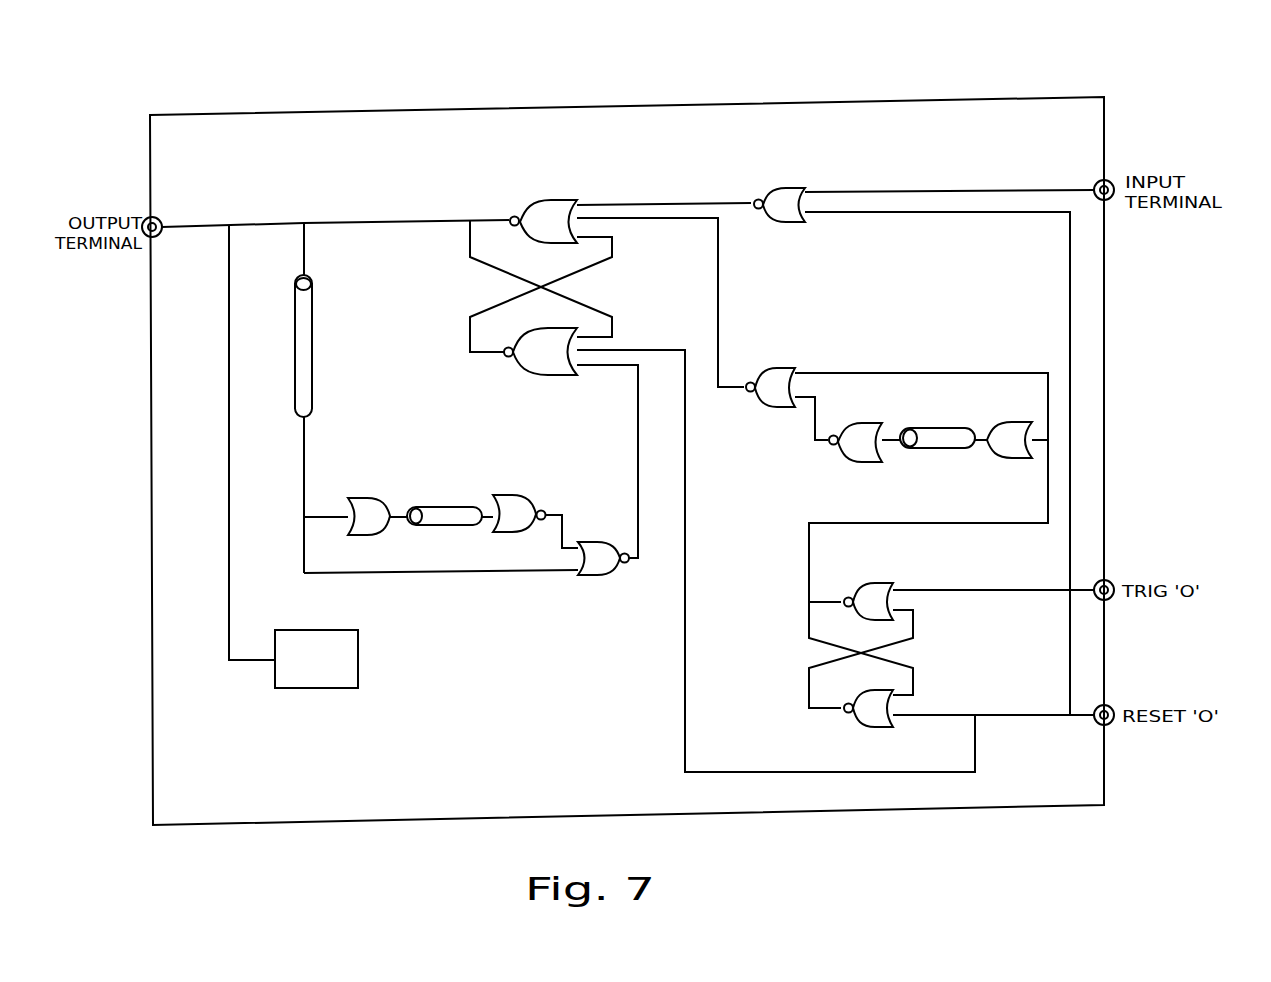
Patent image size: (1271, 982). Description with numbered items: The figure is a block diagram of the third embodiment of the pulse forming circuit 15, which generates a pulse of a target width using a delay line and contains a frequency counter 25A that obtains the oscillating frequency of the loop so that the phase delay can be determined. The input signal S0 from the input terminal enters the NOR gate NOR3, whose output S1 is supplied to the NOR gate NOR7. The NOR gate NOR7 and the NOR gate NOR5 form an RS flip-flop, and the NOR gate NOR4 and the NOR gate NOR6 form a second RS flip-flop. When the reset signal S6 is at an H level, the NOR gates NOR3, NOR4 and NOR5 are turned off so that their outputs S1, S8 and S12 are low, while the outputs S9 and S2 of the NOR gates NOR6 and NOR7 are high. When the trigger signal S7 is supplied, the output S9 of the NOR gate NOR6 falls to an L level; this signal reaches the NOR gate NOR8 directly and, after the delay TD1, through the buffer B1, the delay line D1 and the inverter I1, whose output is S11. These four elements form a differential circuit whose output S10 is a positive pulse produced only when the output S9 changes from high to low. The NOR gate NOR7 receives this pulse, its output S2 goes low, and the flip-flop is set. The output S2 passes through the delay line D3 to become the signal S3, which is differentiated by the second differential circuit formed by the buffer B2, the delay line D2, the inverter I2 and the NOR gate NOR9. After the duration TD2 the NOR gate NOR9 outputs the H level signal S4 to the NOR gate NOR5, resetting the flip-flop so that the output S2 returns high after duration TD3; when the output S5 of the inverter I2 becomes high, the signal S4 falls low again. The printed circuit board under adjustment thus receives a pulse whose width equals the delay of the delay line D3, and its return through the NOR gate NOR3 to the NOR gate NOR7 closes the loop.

The pulse forming circuit 15 is at (993, 97).
The frequency counter 25A is at (291, 690).
The NOR gate NOR3 is at (791, 190).
The NOR gate NOR4 is at (877, 727).
The NOR gate NOR5 is at (540, 376).
The NOR gate NOR6 is at (880, 592).
The NOR gate NOR7 is at (545, 200).
The NOR gate NOR8 is at (780, 377).
The NOR gate NOR9 is at (595, 573).
The delay line D1 is at (945, 448).
The delay line D2 is at (440, 525).
The delay line D3 is at (312, 363).
The buffer B1 is at (1021, 452).
The buffer B2 is at (368, 500).
The inverter I1 is at (859, 453).
The inverter I2 is at (512, 497).
The input signal S0 is at (949, 179).
The output from NOR gate NOR3 S1 is at (664, 195).
The output from NOR gate NOR7 S2 is at (335, 212).
The output from delay line D3 S3 is at (441, 508).
The output from NOR gate NOR9 S4 is at (624, 461).
The output from inverter I2 S5 is at (568, 524).
The reset signal S6 is at (993, 705).
The trigger signal S7 is at (993, 581).
The output from NOR gate NOR4 S8 is at (845, 655).
The output from NOR gate NOR6 S9 is at (912, 487).
The output from NOR gate NOR8 S10 is at (671, 302).
The output from inverter I1 S11 is at (801, 418).
The output from NOR gate NOR5 S12 is at (540, 286).